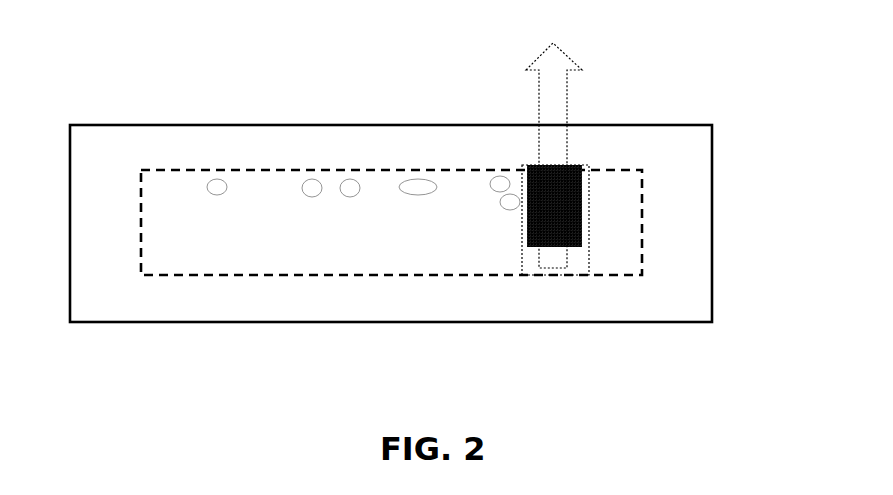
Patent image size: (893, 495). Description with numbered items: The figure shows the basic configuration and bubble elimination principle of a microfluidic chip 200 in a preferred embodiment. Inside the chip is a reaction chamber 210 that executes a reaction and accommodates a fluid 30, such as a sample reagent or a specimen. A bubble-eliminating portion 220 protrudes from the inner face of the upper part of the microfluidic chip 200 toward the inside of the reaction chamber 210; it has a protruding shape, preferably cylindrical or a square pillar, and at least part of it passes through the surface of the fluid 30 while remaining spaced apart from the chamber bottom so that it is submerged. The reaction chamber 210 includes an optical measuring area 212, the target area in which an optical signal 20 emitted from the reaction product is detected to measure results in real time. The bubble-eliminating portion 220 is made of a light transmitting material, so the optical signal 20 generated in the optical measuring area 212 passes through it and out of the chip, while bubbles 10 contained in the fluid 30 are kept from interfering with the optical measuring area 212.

The microfluidic chip 200 is at (114, 86).
The reaction chamber 210 is at (278, 276).
The optical measuring area 212 is at (556, 277).
The bubble-eliminating portion 220 is at (570, 188).
The bubbles 10 is at (598, 183).
The optical signal 20 is at (543, 97).
The fluid 30 is at (398, 253).